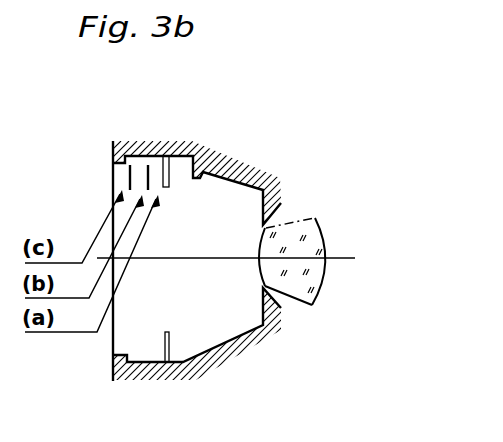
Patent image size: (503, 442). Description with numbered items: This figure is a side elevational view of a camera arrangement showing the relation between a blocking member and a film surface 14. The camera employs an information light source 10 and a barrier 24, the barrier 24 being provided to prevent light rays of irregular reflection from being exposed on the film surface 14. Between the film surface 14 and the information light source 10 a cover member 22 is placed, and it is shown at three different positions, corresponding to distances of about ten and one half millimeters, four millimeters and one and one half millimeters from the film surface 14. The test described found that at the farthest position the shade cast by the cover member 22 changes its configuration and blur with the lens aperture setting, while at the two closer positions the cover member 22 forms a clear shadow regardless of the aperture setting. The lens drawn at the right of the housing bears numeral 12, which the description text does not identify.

The information light source 10 is at (203, 166).
The lens 12 is at (316, 281).
The film surface 14 is at (113, 331).
The cover member 22 is at (127, 176).
The barrier 24 is at (168, 333).